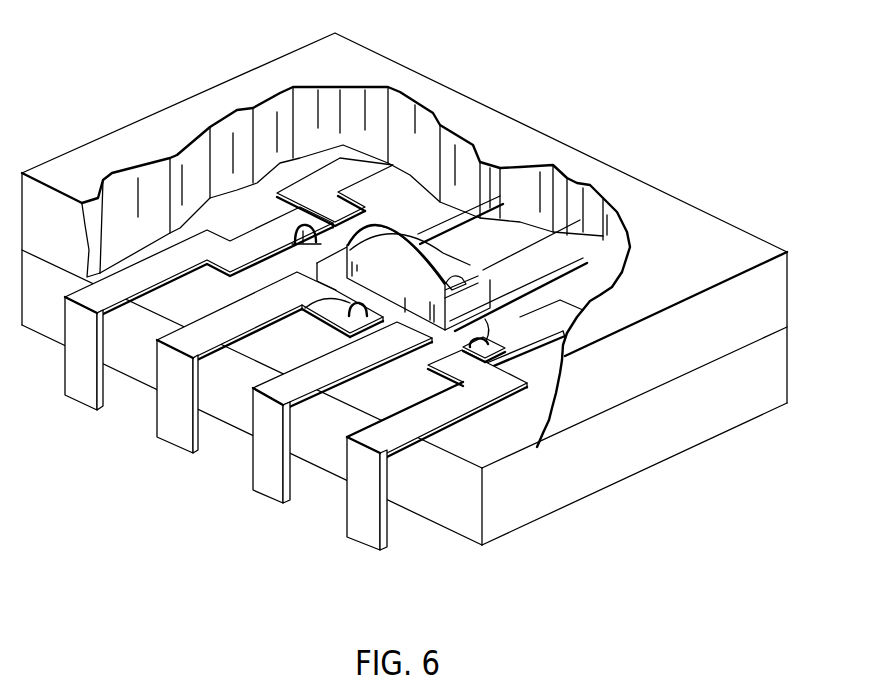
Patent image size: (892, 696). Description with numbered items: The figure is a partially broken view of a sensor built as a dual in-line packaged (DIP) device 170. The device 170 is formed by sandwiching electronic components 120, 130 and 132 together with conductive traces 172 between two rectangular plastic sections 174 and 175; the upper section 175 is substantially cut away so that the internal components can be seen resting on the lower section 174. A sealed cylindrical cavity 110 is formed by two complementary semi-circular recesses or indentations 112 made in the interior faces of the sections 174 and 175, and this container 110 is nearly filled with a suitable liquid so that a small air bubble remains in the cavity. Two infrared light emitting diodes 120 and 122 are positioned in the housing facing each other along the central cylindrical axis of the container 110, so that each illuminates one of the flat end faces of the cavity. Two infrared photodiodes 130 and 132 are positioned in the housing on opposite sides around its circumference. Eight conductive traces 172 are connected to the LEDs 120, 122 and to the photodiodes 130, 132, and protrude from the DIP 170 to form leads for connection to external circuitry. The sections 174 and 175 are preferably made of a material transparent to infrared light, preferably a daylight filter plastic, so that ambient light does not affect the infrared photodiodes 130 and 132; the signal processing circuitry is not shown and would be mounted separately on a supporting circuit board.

The sealed cylindrical cavity 110 is at (472, 328).
The semi-circular recess 112 is at (365, 280).
The infrared light emitting diode 120 is at (302, 308).
The infrared light emitting diode 122 is at (455, 283).
The infrared photodiode 130 is at (300, 230).
The infrared photodiode 132 is at (492, 340).
The dual in-line packaged device 170 is at (608, 494).
The conductive trace 172 is at (268, 499).
The lower plastic section 174 is at (685, 432).
The upper plastic section 175 is at (730, 342).